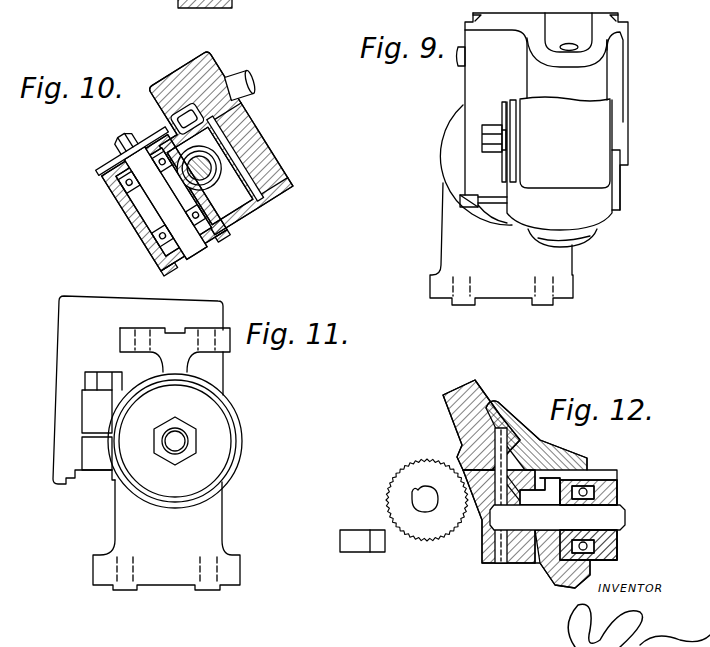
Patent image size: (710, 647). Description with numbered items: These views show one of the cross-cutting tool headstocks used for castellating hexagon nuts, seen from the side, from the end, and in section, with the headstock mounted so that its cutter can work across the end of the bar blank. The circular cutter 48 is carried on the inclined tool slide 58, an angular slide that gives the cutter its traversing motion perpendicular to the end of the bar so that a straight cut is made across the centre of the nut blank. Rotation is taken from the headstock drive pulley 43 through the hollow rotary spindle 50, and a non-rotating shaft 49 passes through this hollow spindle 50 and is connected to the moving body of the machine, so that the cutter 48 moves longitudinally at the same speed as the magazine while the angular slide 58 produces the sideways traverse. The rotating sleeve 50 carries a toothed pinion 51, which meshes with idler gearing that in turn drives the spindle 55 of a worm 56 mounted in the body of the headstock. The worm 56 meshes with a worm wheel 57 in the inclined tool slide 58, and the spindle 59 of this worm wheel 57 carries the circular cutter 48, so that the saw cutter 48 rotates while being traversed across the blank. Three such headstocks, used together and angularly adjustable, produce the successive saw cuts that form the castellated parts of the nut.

In FIG. 11, the pulley 43 is at (230, 465).
In FIG. 9, the circular cutter 48 is at (504, 100).
In FIG. 10, the circular cutter 48 is at (102, 175).
In FIG. 12, the circular cutter 48 is at (412, 462).
In FIG. 10, the non-rotating shaft 49 is at (245, 86).
In FIG. 11, the non-rotating shaft 49 is at (170, 446).
In FIG. 12, the non-rotating shaft 49 is at (597, 518).
In FIG. 12, the hollow rotary spindle 50 is at (607, 507).
In FIG. 12, the toothed pinion 51 is at (552, 553).
In FIG. 10, the spindle 55 is at (206, 192).
In FIG. 10, the worm 56 is at (215, 165).
In FIG. 10, the worm wheel 57 is at (118, 208).
In FIG. 9, the inclined tool slide 58 is at (618, 80).
In FIG. 10, the inclined tool slide 58 is at (165, 82).
In FIG. 12, the inclined tool slide 58 is at (447, 401).
In FIG. 10, the spindle 59 is at (140, 228).